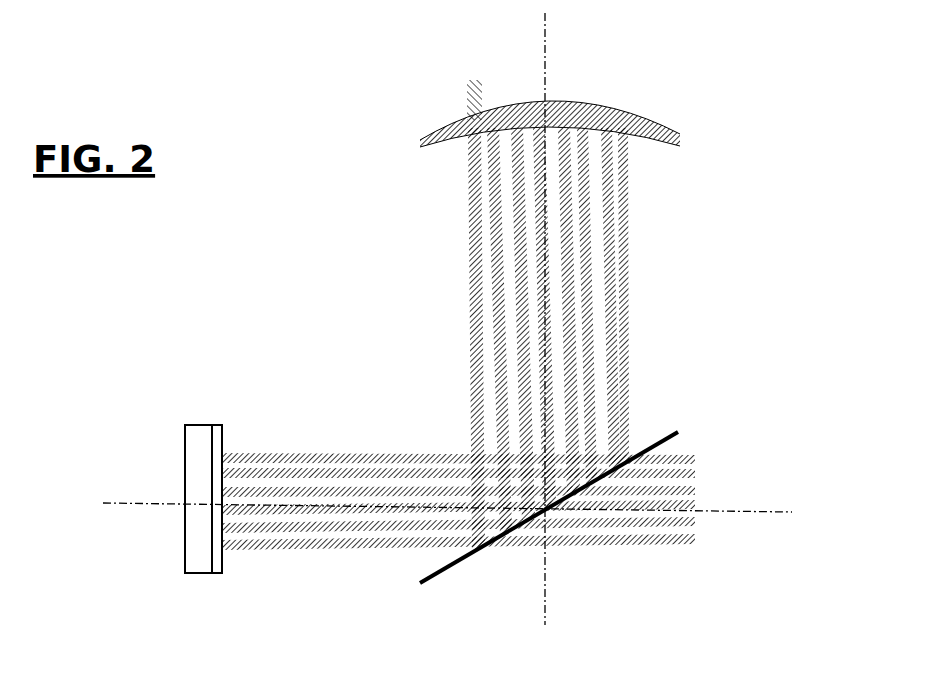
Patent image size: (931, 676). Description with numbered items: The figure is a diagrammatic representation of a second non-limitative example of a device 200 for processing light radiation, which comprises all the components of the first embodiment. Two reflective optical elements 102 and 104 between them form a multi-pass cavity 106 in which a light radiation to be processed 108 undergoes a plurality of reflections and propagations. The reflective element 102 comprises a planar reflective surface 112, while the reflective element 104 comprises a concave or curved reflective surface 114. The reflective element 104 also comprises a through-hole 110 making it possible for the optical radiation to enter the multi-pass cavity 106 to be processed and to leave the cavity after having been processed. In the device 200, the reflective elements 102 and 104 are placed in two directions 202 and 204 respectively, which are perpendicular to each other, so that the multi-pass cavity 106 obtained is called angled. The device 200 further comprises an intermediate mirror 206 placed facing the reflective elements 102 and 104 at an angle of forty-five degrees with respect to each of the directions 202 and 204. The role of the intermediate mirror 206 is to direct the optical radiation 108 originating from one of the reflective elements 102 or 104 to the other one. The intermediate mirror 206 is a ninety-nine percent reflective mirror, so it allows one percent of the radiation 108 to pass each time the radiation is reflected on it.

The device 200 is at (315, 140).
The reflective optical element 102 is at (193, 478).
The reflective optical element 104 is at (558, 148).
The multi-pass cavity 106 is at (310, 282).
The light radiation to be processed 108 is at (455, 80).
The through-hole 110 is at (472, 118).
The planar reflective surface 112 is at (222, 446).
The concave or curved reflective surface 114 is at (647, 134).
The direction 202 is at (733, 509).
The direction 204 is at (547, 592).
The intermediate mirror 206 is at (661, 432).